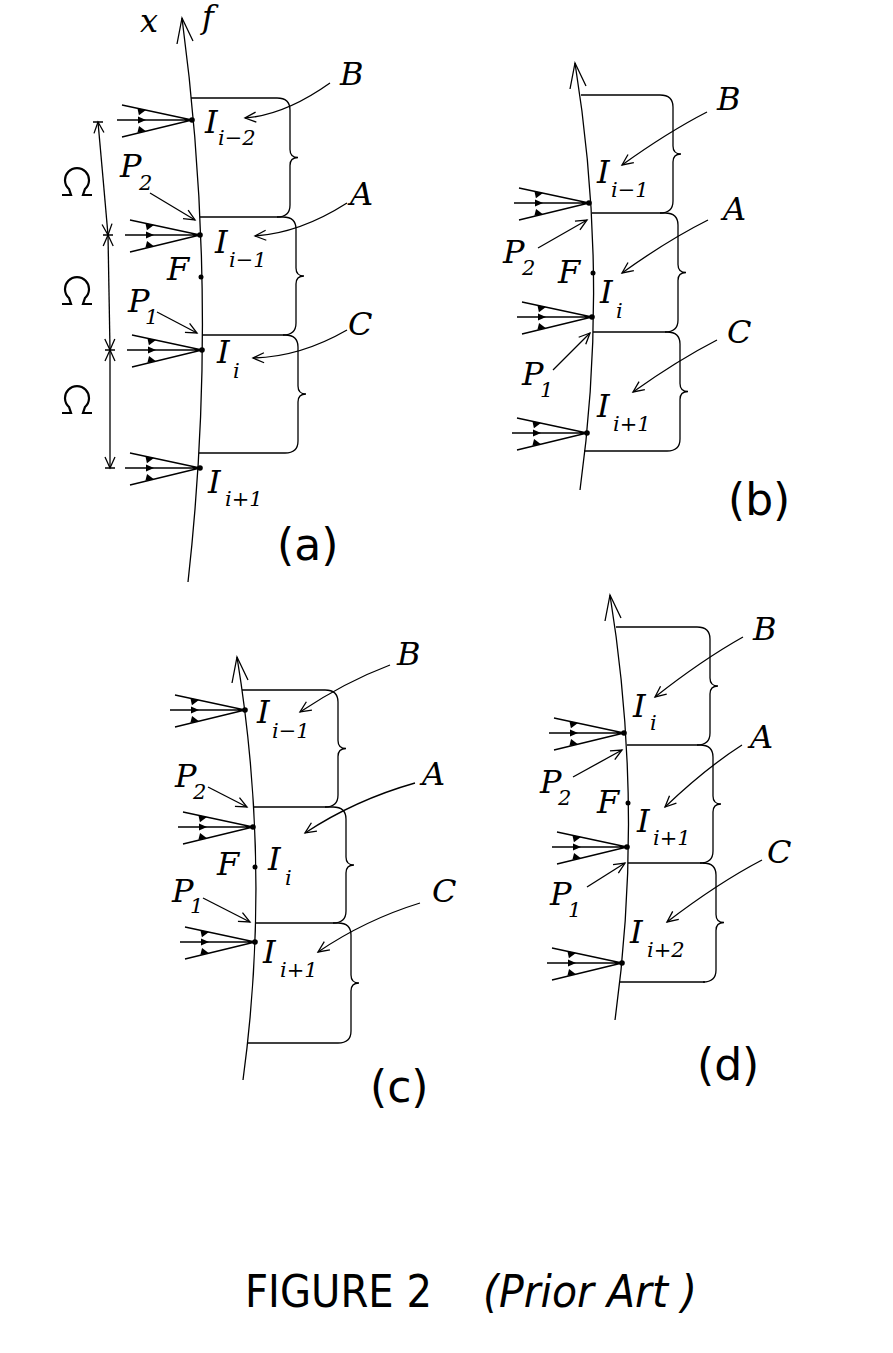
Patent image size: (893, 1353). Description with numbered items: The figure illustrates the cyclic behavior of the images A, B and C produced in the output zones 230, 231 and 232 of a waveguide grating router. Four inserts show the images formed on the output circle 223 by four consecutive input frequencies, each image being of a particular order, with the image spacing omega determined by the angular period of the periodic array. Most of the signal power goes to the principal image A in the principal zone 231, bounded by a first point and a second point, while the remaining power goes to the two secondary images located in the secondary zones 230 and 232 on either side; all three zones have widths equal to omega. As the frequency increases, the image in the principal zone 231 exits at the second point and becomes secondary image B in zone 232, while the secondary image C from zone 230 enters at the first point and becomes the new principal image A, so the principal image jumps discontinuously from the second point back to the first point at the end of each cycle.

The output circle 223 is at (188, 528).
The secondary zone 230 is at (493, 687).
The principal zone 231 is at (491, 568).
The secondary zone 232 is at (482, 451).